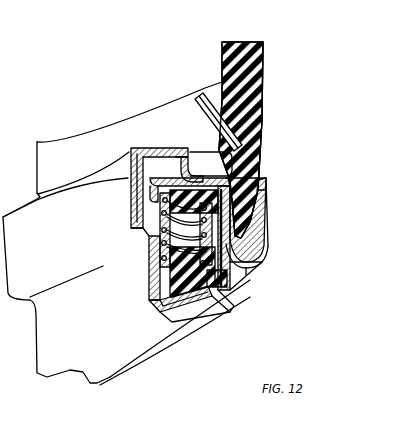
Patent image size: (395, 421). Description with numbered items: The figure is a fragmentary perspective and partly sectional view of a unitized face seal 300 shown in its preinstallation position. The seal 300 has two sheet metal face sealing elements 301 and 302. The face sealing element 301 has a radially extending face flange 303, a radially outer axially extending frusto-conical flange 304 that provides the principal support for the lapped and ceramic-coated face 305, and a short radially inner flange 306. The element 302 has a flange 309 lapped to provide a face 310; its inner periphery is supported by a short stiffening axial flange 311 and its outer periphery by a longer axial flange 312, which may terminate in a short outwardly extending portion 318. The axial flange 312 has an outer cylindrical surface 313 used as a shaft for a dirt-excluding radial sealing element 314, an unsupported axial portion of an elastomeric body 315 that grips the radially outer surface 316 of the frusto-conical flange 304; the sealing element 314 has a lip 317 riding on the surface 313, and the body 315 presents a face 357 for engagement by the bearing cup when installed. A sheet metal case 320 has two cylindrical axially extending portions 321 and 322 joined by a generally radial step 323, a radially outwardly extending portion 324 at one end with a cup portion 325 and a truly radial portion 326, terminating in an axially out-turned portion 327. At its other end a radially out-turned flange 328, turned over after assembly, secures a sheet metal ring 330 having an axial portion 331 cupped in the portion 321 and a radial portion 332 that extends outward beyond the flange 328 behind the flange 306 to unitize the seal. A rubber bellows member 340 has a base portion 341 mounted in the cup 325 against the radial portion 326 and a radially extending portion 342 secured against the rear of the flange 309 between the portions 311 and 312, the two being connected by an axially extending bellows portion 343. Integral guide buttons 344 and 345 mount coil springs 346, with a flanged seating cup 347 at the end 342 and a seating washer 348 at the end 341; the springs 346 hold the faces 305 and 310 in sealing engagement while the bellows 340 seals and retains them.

The seal 300 is at (274, 55).
The face sealing element 301 is at (190, 148).
The face sealing element 302 is at (254, 246).
The face flange 303 is at (236, 144).
The frusto-conical flange 304 is at (248, 122).
The face 305 is at (228, 163).
The radially inner flange 306 is at (210, 137).
The flange 309 is at (235, 182).
The face 310 is at (230, 172).
The stiffening axial flange 311 is at (150, 199).
The axial flange 312 is at (260, 205).
The outer cylindrical surface 313 is at (262, 226).
The radial sealing element 314 is at (260, 238).
The elastomeric body 315 is at (258, 98).
The radially outer surface 316 is at (220, 96).
The lip 317 is at (246, 246).
The outwardly extending portion 318 is at (255, 253).
The sheet metal case 320 is at (145, 282).
The cylindrical axially extending portion 321 is at (157, 215).
The cylindrical axially extending portion 322 is at (150, 262).
The radial step 323 is at (158, 236).
The radially outwardly extending portion 324 is at (165, 340).
The cup portion 325 is at (167, 313).
The radial portion 326 is at (196, 301).
The axially out-turned portion 327 is at (220, 300).
The radially out-turned flange 328 is at (137, 144).
The sheet metal ring 330 is at (150, 184).
The axial portion 331 is at (128, 174).
The radial portion 332 is at (163, 147).
The rubber bellows member 340 is at (230, 265).
The base portion 341 is at (160, 291).
The radially extending portion 342 is at (204, 175).
The bellows portion 343 is at (224, 257).
The guide button 344 is at (162, 203).
The guide button 345 is at (228, 270).
The coil spring 346 is at (158, 223).
The flanged seating cup 347 is at (262, 193).
The seating washer 348 is at (220, 281).
The face 357 is at (240, 42).